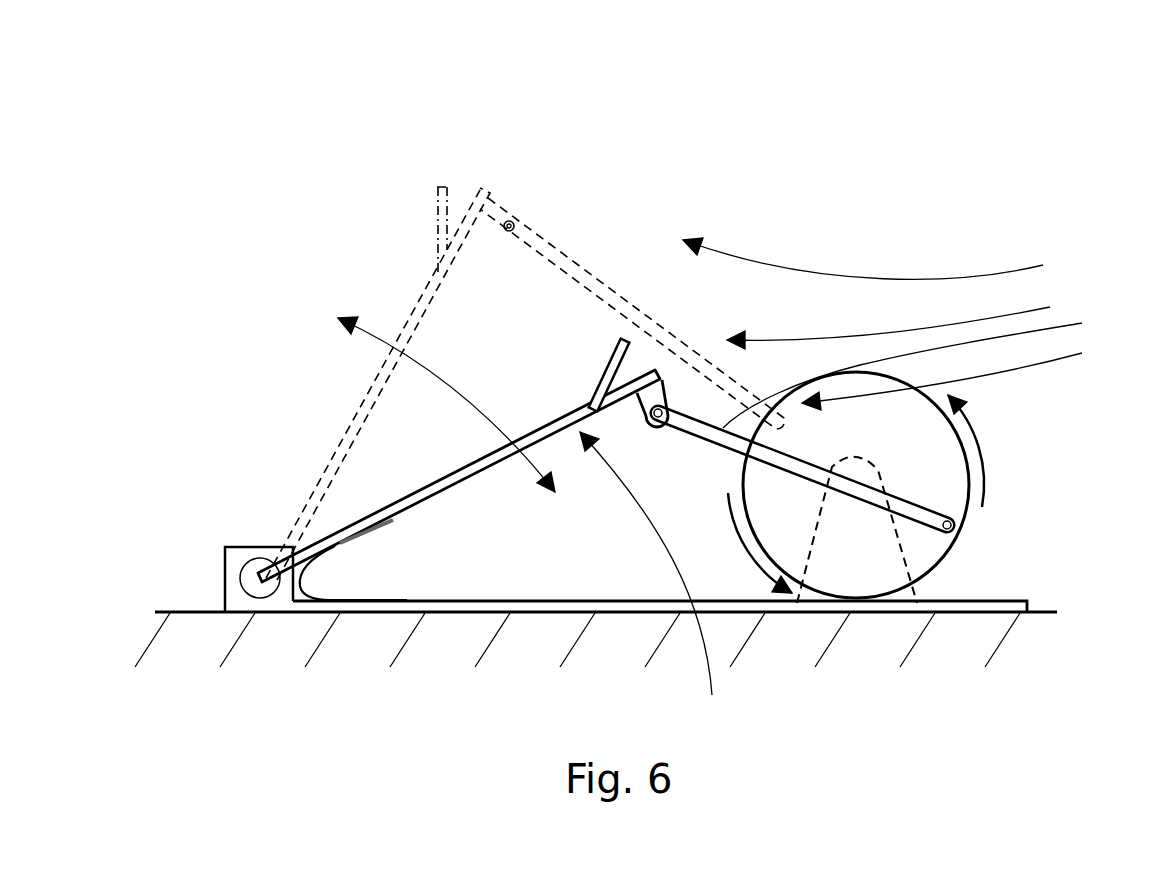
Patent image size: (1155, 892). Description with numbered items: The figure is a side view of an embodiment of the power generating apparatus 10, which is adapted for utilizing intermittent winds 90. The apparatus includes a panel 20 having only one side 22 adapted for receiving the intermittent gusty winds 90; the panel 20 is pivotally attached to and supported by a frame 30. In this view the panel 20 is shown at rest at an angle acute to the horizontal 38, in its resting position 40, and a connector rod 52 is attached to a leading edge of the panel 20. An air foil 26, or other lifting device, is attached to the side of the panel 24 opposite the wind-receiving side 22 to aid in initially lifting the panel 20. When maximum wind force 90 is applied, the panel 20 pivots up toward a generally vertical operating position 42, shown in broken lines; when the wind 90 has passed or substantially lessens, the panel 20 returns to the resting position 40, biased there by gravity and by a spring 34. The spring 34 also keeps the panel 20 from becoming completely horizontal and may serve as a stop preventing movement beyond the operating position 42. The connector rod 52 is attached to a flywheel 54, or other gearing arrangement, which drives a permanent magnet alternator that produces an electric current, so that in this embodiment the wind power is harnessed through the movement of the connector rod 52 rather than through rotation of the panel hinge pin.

The power generating apparatus 10 is at (295, 147).
The panel 20 is at (417, 507).
The side of the panel 22 is at (500, 460).
The side of the panel 24 is at (548, 423).
The air foil 26 is at (623, 345).
The frame 30 is at (885, 608).
The spring 34 is at (307, 598).
The horizontal 38 is at (1042, 614).
The resting position 40 is at (657, 580).
The vertical position 42 is at (405, 308).
The connector rod 52 is at (922, 367).
The flywheel 54 is at (950, 462).
The wind 90 is at (1010, 265).